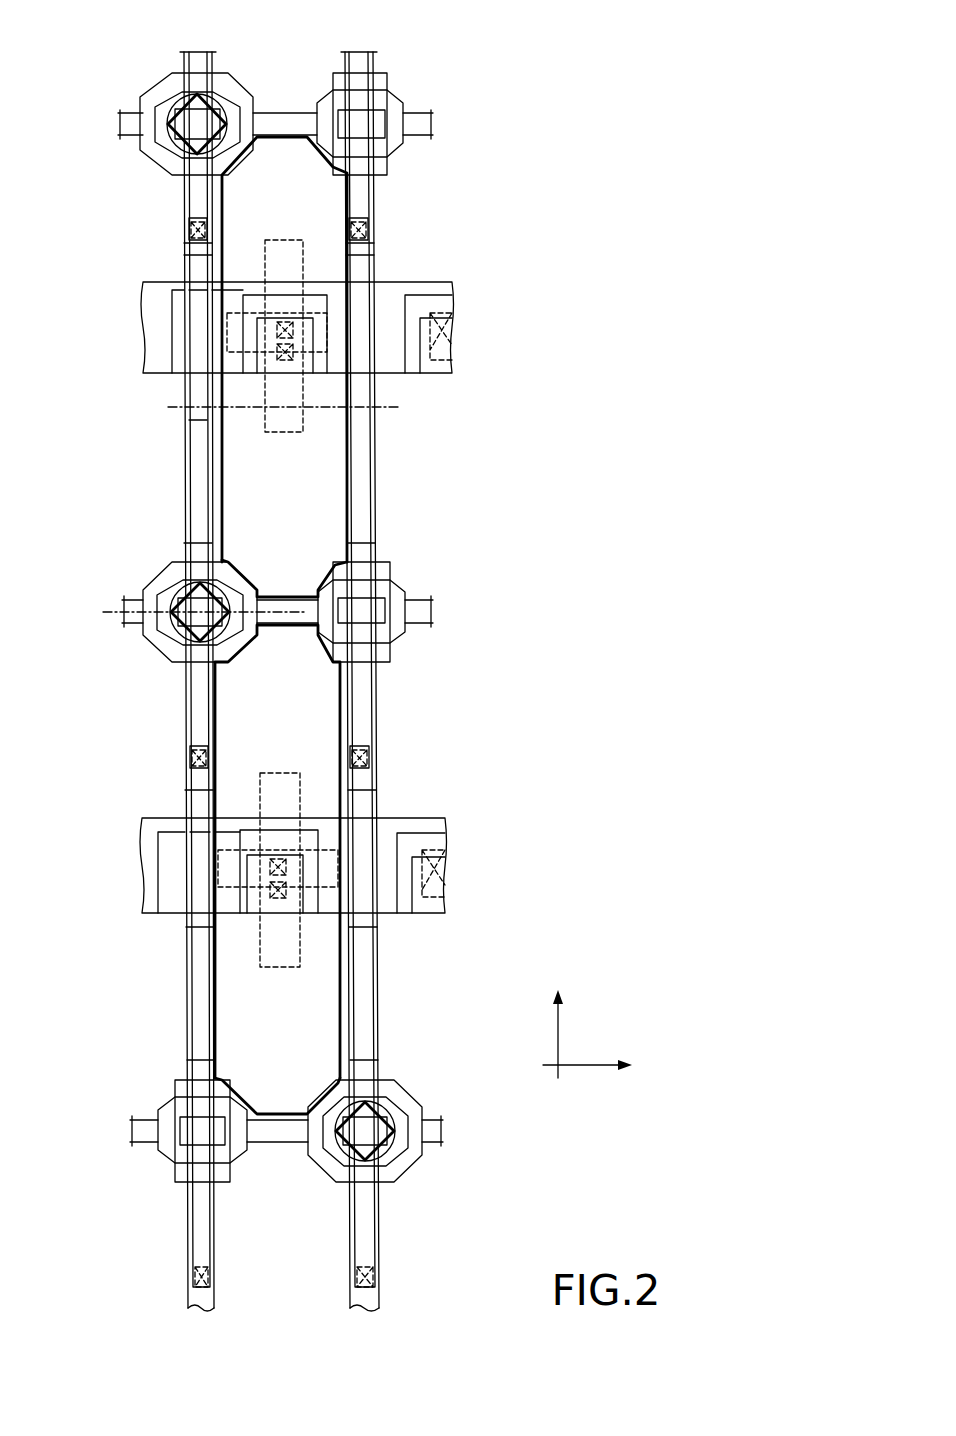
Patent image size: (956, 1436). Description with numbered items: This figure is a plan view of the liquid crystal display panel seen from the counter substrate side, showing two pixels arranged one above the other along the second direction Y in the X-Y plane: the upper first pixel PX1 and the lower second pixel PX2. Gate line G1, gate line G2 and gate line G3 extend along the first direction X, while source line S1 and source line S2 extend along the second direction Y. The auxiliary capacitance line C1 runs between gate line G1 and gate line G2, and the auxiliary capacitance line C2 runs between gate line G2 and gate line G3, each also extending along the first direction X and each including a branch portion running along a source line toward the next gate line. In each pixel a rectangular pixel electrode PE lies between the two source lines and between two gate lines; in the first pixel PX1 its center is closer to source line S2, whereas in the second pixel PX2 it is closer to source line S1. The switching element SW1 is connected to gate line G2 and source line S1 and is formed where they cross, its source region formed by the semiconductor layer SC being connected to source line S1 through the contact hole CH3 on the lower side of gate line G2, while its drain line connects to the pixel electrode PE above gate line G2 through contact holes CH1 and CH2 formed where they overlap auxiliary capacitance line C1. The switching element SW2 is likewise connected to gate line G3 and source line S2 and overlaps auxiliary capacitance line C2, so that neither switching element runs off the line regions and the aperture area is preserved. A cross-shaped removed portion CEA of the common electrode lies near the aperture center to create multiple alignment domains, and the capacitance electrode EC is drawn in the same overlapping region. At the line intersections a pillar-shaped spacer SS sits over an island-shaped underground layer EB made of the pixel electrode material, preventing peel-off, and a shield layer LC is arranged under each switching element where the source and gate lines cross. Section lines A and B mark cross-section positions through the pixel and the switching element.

The source line S1 is at (198, 54).
The source line S2 is at (359, 54).
The gate line G1 is at (433, 124).
The gate line G2 is at (435, 612).
The gate line G3 is at (442, 1131).
The auxiliary capacitance line C1 is at (142, 337).
The auxiliary capacitance line C2 is at (142, 850).
The pixel electrode PE is at (222, 465).
The first pixel PX1 is at (448, 210).
The second pixel PX2 is at (440, 750).
The switching element SW1 is at (168, 554).
The switching element SW2 is at (402, 1083).
The shield layer LC is at (158, 84).
The underground layer EB is at (175, 137).
The pillar-shaped spacer SS is at (223, 98).
The semiconductor layer SC is at (193, 435).
The capacitance electrode EC is at (327, 296).
The removed portion CEA is at (307, 418).
The contact hole CH1 is at (293, 432).
The contact hole CH2 is at (287, 278).
The contact hole CH3 is at (188, 230).
The section line A- A is at (283, 407).
The section line B- B is at (198, 612).
The first direction X is at (598, 1034).
The second direction Y is at (558, 972).